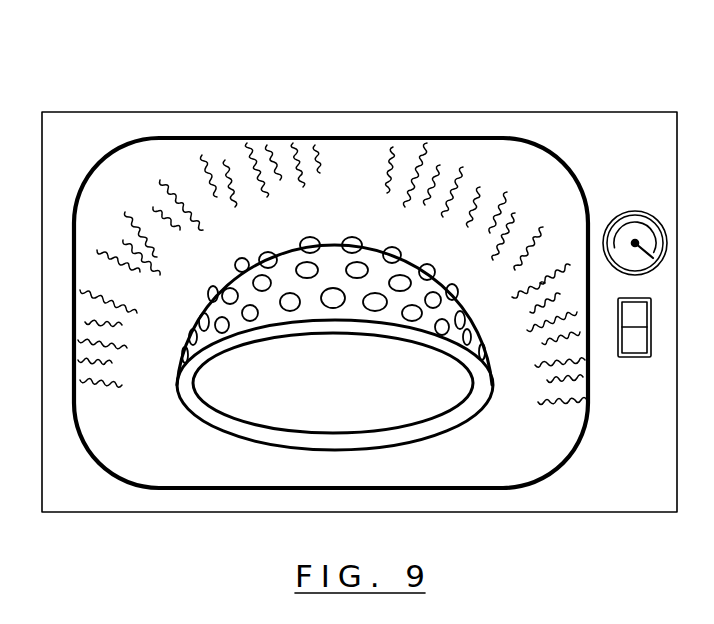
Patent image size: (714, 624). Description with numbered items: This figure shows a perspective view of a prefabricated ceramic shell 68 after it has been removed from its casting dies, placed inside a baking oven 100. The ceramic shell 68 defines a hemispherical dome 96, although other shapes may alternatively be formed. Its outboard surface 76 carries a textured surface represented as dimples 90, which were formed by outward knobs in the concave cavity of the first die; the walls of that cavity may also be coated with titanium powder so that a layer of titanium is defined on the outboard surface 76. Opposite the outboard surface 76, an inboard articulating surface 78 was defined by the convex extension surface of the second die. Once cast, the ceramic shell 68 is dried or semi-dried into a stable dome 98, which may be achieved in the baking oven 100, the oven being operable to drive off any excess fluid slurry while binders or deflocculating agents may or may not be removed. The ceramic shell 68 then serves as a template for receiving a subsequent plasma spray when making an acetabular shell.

The baking oven 100 is at (231, 112).
The ceramic shell 68 is at (354, 320).
The outboard surface 76 is at (299, 250).
The hemispherical dome 96 is at (373, 258).
The inboard articulating surface 78 is at (328, 459).
The dimples 90 is at (408, 209).
The stable dome 98 is at (332, 230).